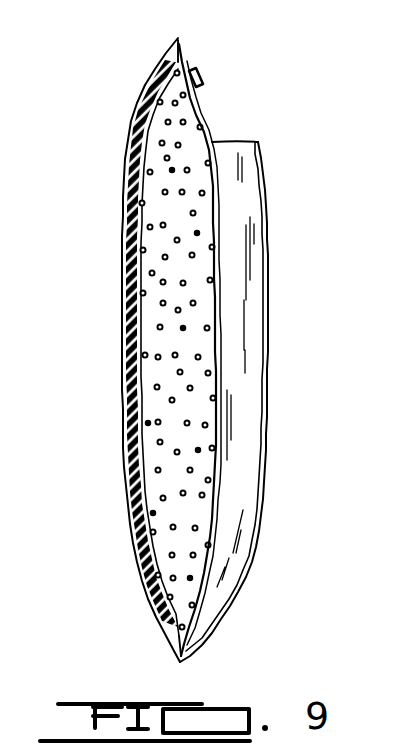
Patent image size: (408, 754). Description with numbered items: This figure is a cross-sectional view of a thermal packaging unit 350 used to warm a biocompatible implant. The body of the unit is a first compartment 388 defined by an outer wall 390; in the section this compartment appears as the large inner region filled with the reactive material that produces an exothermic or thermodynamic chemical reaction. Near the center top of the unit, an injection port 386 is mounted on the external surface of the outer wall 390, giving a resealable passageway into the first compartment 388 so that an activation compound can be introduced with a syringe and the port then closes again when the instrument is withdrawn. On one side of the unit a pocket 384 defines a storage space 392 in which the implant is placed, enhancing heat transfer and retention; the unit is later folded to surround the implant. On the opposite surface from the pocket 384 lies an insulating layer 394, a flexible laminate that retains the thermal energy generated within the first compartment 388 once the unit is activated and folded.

The thermal packaging unit 350 is at (116, 110).
The pocket 384 is at (265, 207).
The injection port 386 is at (199, 75).
The first compartment 388 is at (184, 122).
The outer wall 390 is at (128, 183).
The storage space 392 is at (240, 325).
The insulating layer 394 is at (130, 266).